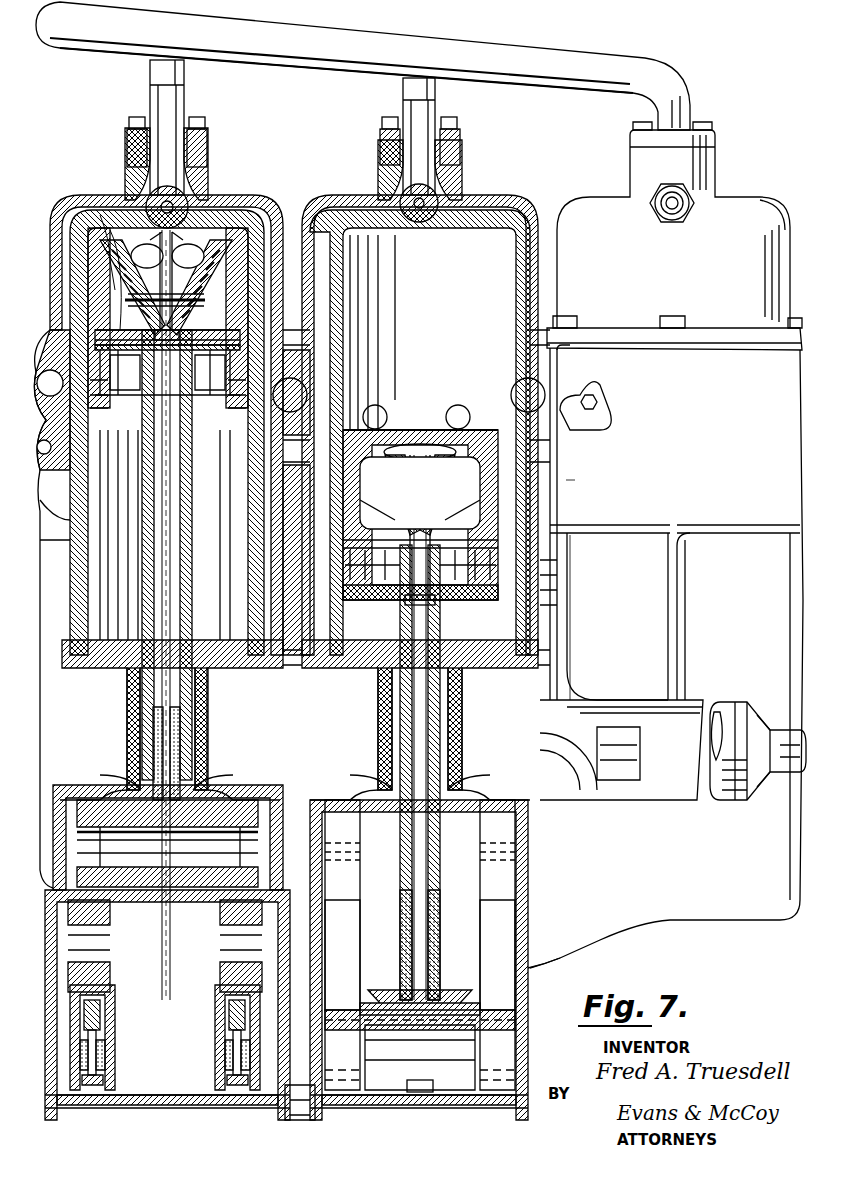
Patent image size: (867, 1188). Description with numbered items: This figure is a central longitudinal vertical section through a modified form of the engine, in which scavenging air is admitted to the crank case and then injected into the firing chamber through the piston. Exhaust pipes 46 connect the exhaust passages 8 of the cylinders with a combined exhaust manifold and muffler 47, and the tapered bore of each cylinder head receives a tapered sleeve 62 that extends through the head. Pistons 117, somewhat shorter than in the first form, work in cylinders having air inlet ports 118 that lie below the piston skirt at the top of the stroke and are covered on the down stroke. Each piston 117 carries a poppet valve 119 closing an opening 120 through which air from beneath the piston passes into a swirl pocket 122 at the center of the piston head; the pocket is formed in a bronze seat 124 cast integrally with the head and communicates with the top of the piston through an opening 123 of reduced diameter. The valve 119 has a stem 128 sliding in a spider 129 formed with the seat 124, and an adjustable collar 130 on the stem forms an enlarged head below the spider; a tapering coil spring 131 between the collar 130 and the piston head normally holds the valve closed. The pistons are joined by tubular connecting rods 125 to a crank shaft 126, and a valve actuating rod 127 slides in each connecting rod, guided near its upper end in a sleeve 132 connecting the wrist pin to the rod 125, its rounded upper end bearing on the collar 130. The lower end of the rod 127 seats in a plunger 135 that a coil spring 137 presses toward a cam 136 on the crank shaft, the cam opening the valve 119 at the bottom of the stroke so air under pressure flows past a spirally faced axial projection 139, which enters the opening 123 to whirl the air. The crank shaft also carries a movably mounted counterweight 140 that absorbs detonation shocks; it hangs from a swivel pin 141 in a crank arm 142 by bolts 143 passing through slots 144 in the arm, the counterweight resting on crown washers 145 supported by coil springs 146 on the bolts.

The exhaust passages 8 is at (167, 195).
The exhaust pipes 46 is at (570, 655).
The combined exhaust manifold and muffler 47 is at (697, 700).
The tapered sleeve 62 is at (445, 195).
The pistons 117 is at (240, 246).
The air inlet ports 118 is at (262, 488).
The poppet valve 119 is at (250, 252).
The opening 120 is at (100, 210).
The swirl pocket 122 is at (200, 282).
The opening of reduced diameter 123 is at (180, 250).
The seat 124 is at (237, 235).
The tubular connecting rods 125 is at (190, 585).
The crank shaft 126 is at (560, 925).
The valve actuating rod 127 is at (426, 752).
The stem 128 is at (380, 572).
The spider 129 is at (557, 495).
The adjustable collar 130 is at (186, 428).
The tapering coil spring 131 is at (186, 400).
The sleeve 132 is at (557, 568).
The plunger 135 is at (205, 775).
The cam 136 is at (167, 905).
The coil spring 137 is at (180, 732).
The spirally faced axial projection 139 is at (113, 232).
The counterweight 140 is at (220, 1058).
The swivel pin 141 is at (113, 985).
The crank arm 142 is at (105, 910).
The bolts 143 is at (113, 1003).
The slots 144 is at (237, 1120).
The crown washers 145 is at (113, 1040).
The coil springs 146 is at (110, 1050).